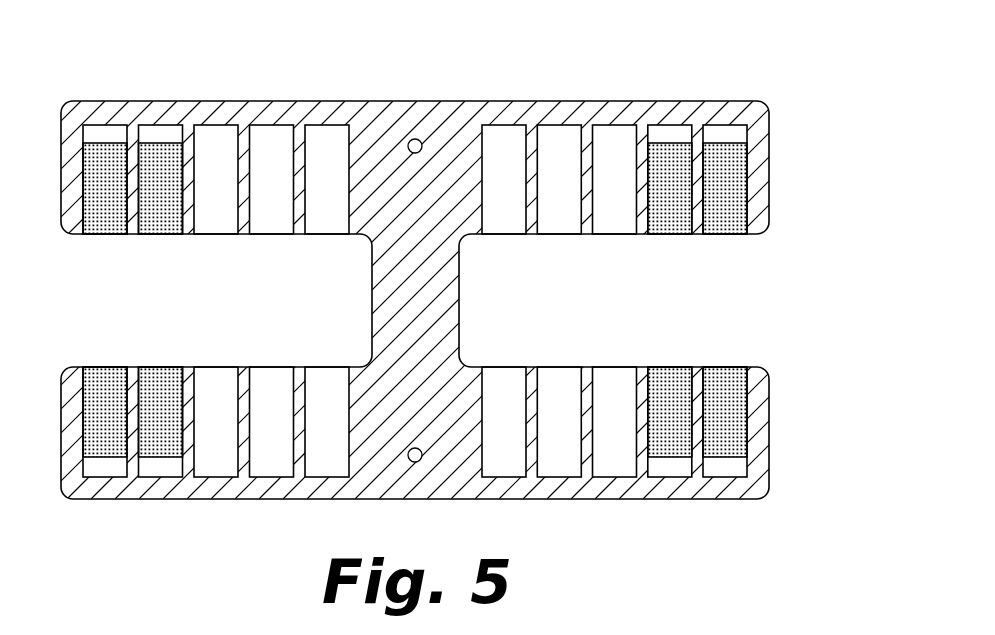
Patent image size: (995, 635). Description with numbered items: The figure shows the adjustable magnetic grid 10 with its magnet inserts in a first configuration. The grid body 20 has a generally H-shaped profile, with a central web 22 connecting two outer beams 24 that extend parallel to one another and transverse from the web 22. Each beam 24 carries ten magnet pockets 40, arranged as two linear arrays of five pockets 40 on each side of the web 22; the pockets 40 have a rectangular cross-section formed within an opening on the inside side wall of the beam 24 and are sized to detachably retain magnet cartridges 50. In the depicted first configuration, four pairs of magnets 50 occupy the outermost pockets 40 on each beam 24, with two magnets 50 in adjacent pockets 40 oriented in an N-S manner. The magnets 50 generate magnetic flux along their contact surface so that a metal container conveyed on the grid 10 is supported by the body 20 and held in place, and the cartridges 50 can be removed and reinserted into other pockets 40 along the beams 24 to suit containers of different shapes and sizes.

The adjustable magnetic grid 10 is at (825, 77).
The grid body 20 is at (105, 94).
The central web 22 is at (405, 315).
The outer beams 24 is at (440, 122).
The magnet pocket 40 is at (613, 388).
The magnet cartridge 50 is at (727, 387).